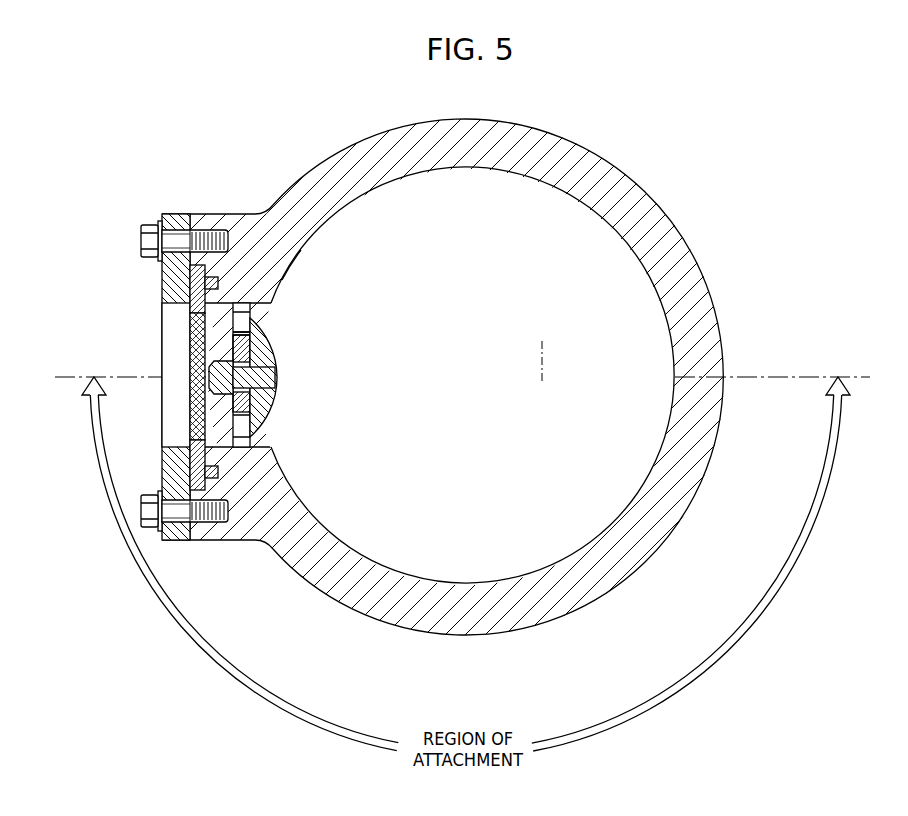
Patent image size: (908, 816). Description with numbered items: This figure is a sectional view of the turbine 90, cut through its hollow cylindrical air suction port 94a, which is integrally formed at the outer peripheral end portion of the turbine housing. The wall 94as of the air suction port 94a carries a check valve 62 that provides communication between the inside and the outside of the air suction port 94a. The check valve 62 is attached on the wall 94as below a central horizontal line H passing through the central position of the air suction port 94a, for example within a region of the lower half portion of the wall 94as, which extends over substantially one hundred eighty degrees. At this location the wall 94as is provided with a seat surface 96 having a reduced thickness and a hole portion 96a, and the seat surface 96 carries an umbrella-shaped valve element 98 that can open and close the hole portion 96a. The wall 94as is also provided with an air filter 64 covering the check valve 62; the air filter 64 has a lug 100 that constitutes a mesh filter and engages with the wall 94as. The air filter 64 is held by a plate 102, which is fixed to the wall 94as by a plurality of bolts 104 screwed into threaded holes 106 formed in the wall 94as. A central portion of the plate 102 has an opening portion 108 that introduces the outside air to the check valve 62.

The turbine 90 is at (649, 132).
The air suction port 94a is at (251, 184).
The wall 94as is at (277, 263).
The plate 102 is at (173, 212).
The bolt 104 is at (143, 242).
The threaded hole 106 is at (211, 229).
The opening portion 108 is at (190, 301).
The air filter 64 is at (180, 356).
The seat surface 96 is at (240, 433).
The hole portion 96a is at (243, 340).
The check valve 62 is at (283, 388).
The umbrella-shaped valve element 98 is at (266, 402).
The lug 100 is at (216, 472).
The central horizontal line H is at (542, 351).